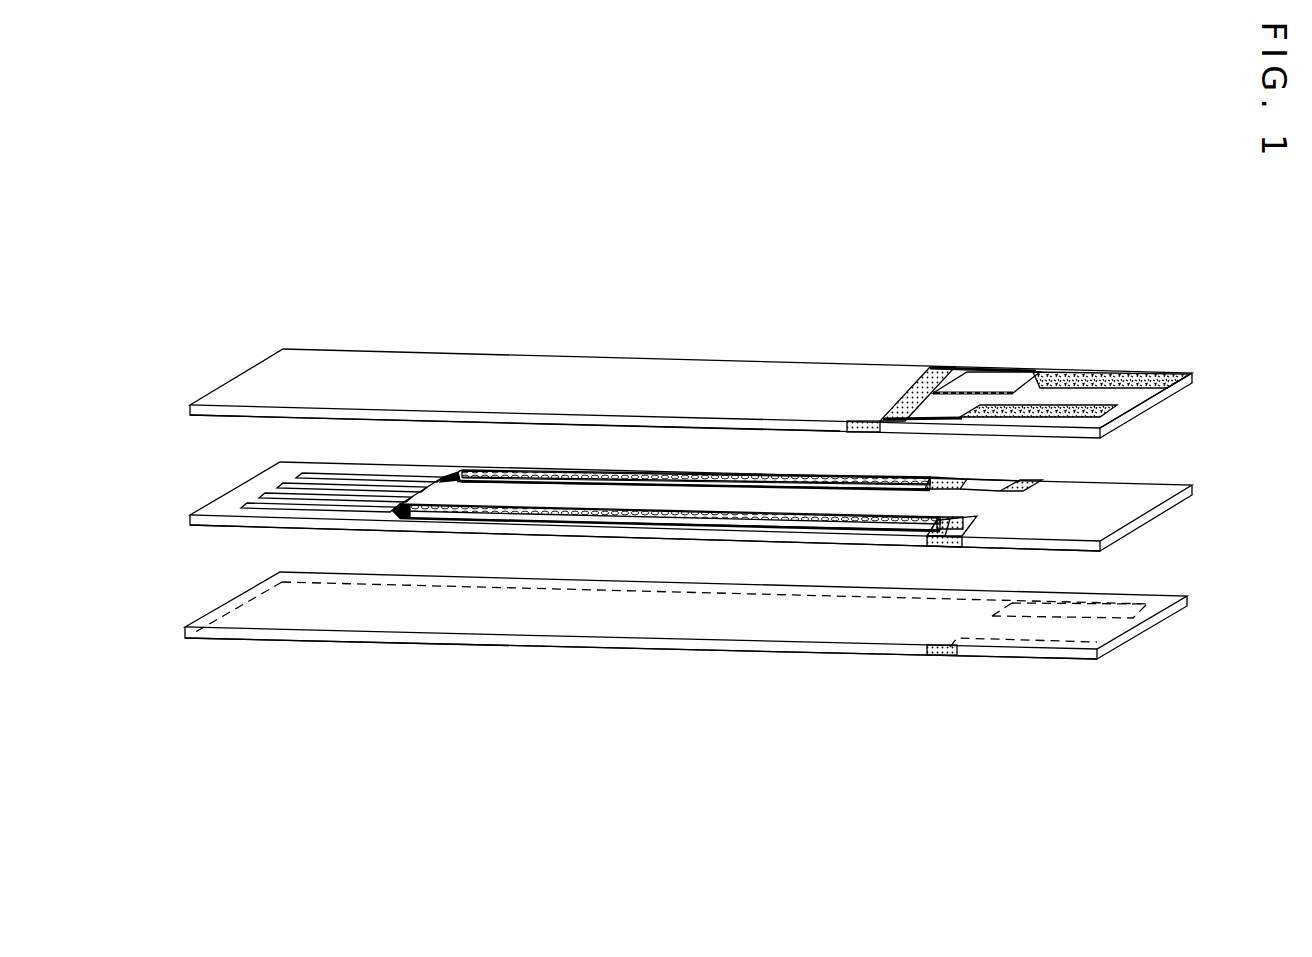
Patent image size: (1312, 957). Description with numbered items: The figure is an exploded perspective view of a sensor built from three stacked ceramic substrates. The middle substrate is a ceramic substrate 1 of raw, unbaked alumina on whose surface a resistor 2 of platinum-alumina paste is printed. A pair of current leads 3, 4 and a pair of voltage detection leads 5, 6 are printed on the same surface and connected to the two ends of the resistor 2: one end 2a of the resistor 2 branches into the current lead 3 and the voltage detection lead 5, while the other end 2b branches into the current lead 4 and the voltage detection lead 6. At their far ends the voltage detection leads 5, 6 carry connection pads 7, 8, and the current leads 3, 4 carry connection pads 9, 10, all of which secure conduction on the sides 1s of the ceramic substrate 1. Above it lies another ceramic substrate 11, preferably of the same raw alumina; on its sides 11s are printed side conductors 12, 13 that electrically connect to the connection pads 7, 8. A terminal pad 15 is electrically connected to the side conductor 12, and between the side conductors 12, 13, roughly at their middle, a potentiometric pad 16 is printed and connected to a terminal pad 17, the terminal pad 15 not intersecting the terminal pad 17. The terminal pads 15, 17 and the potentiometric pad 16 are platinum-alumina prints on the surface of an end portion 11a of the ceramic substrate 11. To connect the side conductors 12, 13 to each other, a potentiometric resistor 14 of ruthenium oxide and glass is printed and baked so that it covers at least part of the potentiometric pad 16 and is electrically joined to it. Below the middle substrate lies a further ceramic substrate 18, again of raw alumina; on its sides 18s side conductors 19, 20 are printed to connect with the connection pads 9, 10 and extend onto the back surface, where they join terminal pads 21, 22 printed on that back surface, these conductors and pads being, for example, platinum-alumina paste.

The ceramic substrate 1 is at (570, 497).
The sides of the ceramic substrate 1s is at (978, 544).
The resistor 2 is at (343, 478).
The end of the resistor 2a is at (458, 474).
The another end of the resistor 2b is at (398, 512).
The current lead 3 is at (728, 479).
The current lead 4 is at (718, 523).
The voltage detection lead 5 is at (810, 479).
The voltage detection lead 6 is at (780, 528).
The connection pad 7 is at (950, 484).
The connection pad 8 is at (855, 531).
The connection pad 9 is at (1038, 488).
The connection pad 10 is at (978, 516).
The ceramic substrate 11 is at (375, 380).
The sides of the ceramic substrate 11s is at (830, 420).
The end portion of the ceramic substrate 11a is at (1157, 372).
The side conductor 12 is at (863, 431).
The side conductor 13 is at (950, 368).
The potentiometric resistor 14 is at (915, 385).
The terminal pad 15 is at (1060, 428).
The potentiometric pad 16 is at (967, 390).
The terminal pad 17 is at (1113, 370).
The ceramic substrate 18 is at (530, 600).
The sides of the ceramic substrate 18s is at (856, 655).
The side conductor 19 is at (940, 657).
The side conductor 20 is at (1052, 592).
The terminal pad 21 is at (1005, 648).
The terminal pad 22 is at (1138, 600).